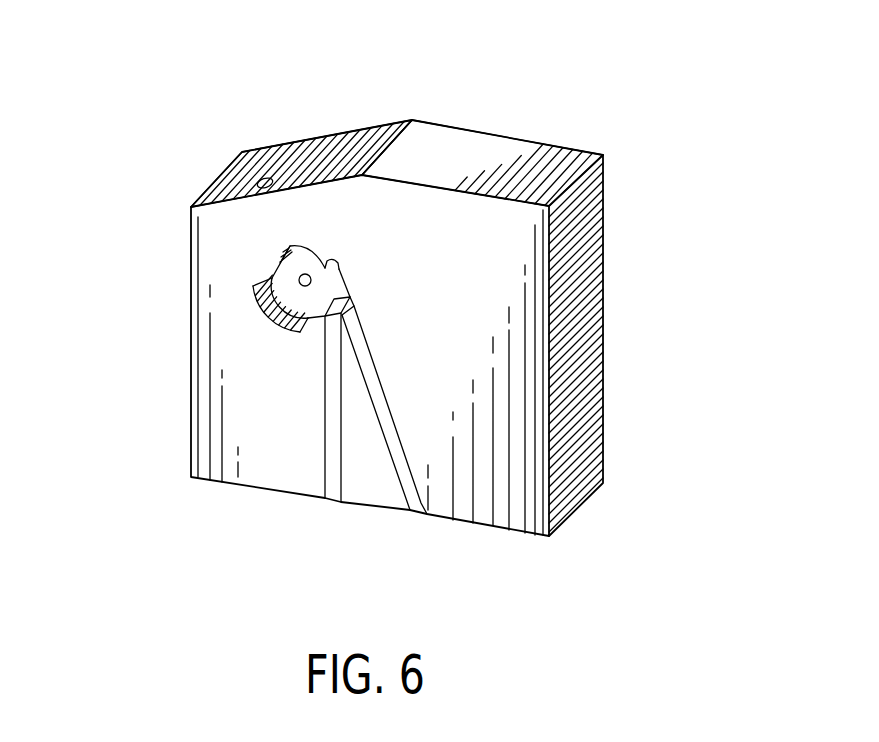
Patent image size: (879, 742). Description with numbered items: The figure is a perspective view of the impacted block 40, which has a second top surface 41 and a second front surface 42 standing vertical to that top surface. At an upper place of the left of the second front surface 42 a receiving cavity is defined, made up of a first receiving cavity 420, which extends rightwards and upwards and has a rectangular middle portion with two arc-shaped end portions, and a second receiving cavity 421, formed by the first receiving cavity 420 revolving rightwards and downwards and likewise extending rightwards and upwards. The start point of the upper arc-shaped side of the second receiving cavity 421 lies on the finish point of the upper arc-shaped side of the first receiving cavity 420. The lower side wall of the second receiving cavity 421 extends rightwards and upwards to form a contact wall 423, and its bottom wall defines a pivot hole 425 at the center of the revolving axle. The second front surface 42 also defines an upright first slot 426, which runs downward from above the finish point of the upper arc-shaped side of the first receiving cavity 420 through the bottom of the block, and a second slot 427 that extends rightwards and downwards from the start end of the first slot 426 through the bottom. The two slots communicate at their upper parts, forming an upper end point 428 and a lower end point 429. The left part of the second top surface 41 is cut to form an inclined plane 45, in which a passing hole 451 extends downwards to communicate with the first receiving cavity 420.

The impacted block 40 is at (610, 143).
The second top surface 41 is at (457, 143).
The second front surface 42 is at (210, 413).
The inclined plane 45 is at (343, 147).
The passing hole 451 is at (258, 180).
The first receiving cavity 420 is at (256, 304).
The second receiving cavity 421 is at (327, 281).
The contact wall 423 is at (323, 318).
The pivot hole 425 is at (299, 279).
The first slot 426 is at (337, 506).
The second slot 427 is at (418, 512).
The upper end point 428 is at (339, 264).
The lower end point 429 is at (352, 310).